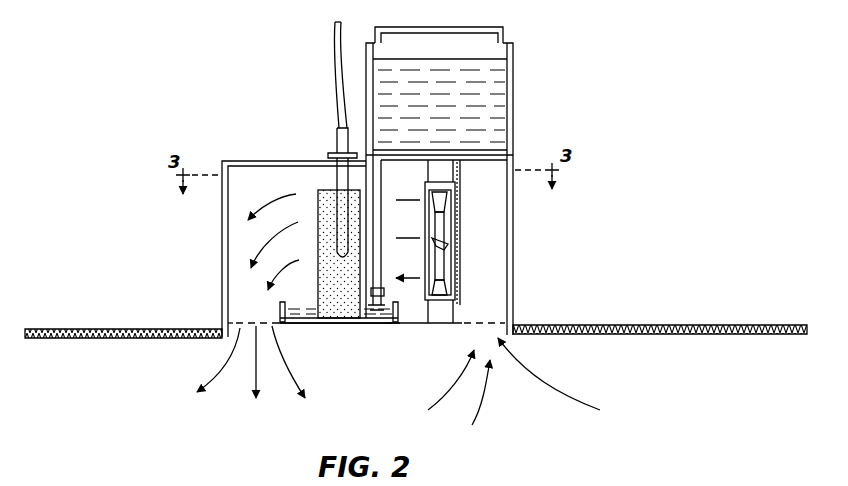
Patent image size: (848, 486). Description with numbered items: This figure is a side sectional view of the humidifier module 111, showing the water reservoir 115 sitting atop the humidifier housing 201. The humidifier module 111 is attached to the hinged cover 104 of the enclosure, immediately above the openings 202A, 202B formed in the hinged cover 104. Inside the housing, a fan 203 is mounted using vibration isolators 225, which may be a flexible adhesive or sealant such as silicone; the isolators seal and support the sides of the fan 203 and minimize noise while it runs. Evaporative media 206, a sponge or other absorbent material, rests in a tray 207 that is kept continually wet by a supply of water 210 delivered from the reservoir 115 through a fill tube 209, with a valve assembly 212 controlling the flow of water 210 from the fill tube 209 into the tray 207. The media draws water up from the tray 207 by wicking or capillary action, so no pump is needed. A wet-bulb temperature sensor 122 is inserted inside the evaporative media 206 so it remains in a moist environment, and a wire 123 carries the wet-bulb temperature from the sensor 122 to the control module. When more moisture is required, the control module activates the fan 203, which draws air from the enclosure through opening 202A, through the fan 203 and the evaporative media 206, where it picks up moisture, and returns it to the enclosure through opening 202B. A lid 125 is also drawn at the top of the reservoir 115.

The hinged cover 104 is at (776, 325).
The humidifier module 111 is at (88, 140).
The water reservoir 115 is at (510, 60).
The wet-bulb temperature sensor 122 is at (337, 136).
The wire 123 is at (338, 70).
The reservoir lid 125 is at (490, 26).
The humidifier housing 201 is at (222, 243).
The opening 202A is at (482, 332).
The opening 202B is at (243, 332).
The fan 203 is at (440, 228).
The evaporative media 206 is at (316, 190).
The tray 207 is at (293, 330).
The fill tube 209 is at (390, 288).
The water 210 is at (470, 88).
The valve assembly 212 is at (388, 334).
The vibration isolators 225 is at (440, 170).